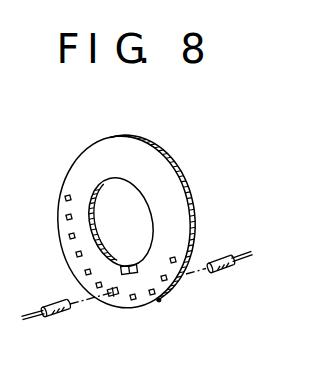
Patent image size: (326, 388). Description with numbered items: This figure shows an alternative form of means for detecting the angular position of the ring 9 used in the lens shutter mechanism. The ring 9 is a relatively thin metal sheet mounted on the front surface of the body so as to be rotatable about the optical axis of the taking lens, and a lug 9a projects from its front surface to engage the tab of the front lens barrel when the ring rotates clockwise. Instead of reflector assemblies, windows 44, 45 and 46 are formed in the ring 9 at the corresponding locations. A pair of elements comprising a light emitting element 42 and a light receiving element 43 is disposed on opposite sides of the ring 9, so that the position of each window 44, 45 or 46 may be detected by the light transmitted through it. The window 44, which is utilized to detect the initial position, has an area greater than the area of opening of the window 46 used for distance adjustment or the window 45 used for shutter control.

The ring 9 is at (165, 178).
The lug 9a is at (129, 264).
The light emitting element 42 is at (52, 306).
The light receiving element 43 is at (227, 268).
The window 44 is at (112, 297).
The window 45 is at (65, 252).
The window 46 is at (160, 300).